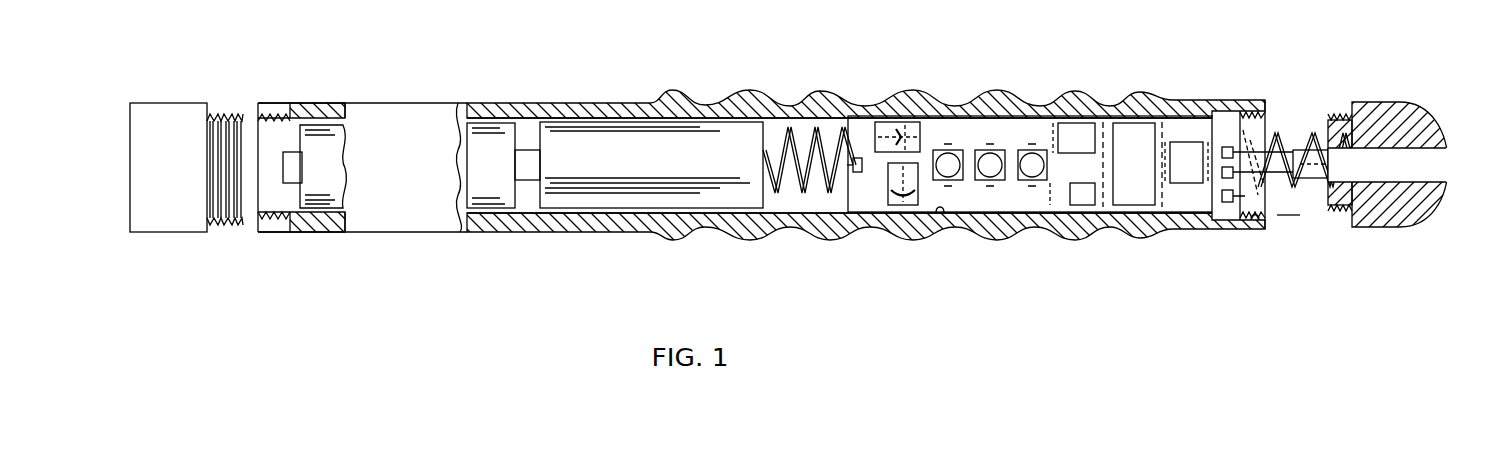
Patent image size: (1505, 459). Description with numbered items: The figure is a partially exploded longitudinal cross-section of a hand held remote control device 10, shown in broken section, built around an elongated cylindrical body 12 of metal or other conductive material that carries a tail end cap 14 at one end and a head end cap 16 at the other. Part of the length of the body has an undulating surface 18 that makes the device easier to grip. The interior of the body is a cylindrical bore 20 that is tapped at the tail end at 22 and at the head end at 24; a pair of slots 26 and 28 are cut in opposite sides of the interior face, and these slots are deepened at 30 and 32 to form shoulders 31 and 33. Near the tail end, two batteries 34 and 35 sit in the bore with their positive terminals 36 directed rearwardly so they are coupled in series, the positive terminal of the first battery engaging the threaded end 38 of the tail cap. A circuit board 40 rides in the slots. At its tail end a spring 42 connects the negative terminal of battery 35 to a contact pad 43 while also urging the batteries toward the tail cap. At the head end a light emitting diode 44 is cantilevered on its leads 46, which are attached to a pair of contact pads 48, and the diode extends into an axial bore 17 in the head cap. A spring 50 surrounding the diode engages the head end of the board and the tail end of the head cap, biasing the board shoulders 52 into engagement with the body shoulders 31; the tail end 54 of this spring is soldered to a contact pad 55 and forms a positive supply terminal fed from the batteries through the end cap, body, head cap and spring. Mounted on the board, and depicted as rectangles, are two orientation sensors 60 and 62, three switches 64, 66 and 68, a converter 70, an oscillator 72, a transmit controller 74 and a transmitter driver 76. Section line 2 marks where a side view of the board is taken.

The hand held remote control device 10 is at (768, 259).
The elongated cylindrical body 12 is at (745, 128).
The tail end cap 14 is at (160, 112).
The head end cap 16 is at (1408, 139).
The axial bore 17 is at (1448, 162).
The undulating surface 18 is at (1058, 95).
The cylindrical bore 20 is at (786, 114).
The tail end tapping 22 is at (255, 200).
The head end tapping 24 is at (1267, 200).
The slot 26 is at (978, 110).
The slot 28 is at (939, 216).
The deepened slot portion 30 is at (1236, 110).
The body shoulder 31 is at (1213, 103).
The deepened slot portion 32 is at (1258, 223).
The body shoulder 33 is at (1205, 228).
The battery 34 is at (492, 200).
The battery 35 is at (577, 202).
The positive terminal 36 is at (293, 155).
The threaded end 38 is at (249, 126).
The circuit board 40 is at (1050, 205).
The spring 42 is at (822, 180).
The contact pad 43 is at (858, 172).
The light emitting diode 44 is at (1313, 178).
The leads 46 is at (1283, 180).
The contact pads 48 is at (1198, 221).
The spring 50 is at (1312, 143).
The board shoulders 52 is at (1212, 108).
The tail end of spring 54 is at (1240, 205).
The contact pad 55 is at (1218, 228).
The orientation sensor 60 is at (883, 125).
The orientation sensor 62 is at (912, 163).
The switch 64 is at (957, 175).
The switch 66 is at (998, 177).
The switch 68 is at (1023, 177).
The converter 70 is at (1080, 125).
The oscillator 72 is at (1083, 200).
The transmit controller 74 is at (1148, 175).
The transmitter driver 76 is at (1185, 142).
The section line 2 is at (822, 105).